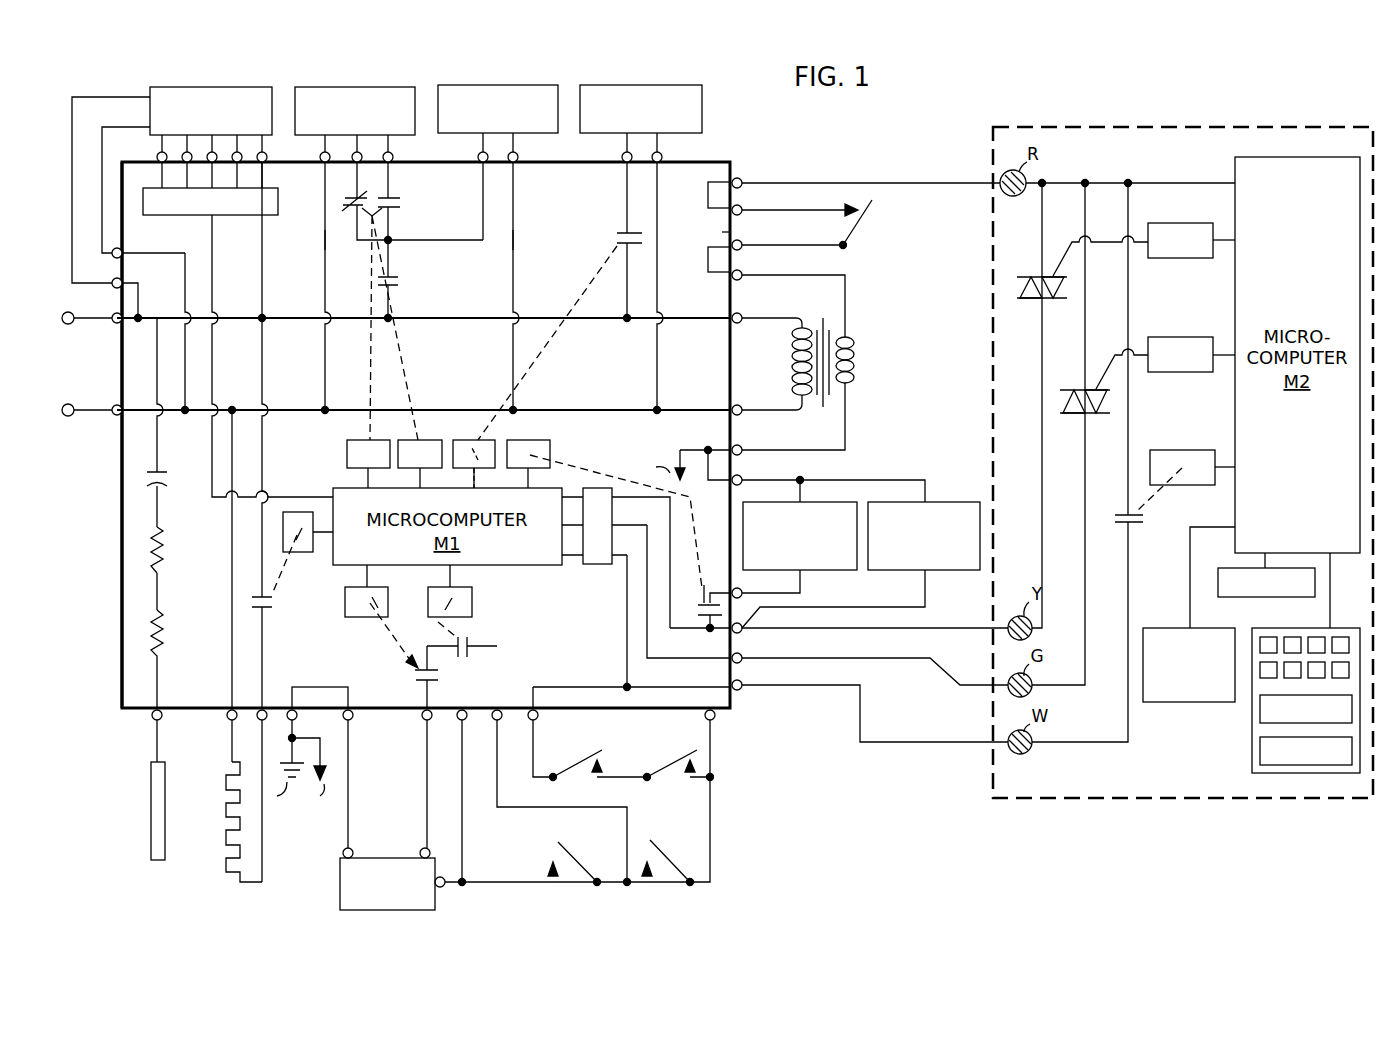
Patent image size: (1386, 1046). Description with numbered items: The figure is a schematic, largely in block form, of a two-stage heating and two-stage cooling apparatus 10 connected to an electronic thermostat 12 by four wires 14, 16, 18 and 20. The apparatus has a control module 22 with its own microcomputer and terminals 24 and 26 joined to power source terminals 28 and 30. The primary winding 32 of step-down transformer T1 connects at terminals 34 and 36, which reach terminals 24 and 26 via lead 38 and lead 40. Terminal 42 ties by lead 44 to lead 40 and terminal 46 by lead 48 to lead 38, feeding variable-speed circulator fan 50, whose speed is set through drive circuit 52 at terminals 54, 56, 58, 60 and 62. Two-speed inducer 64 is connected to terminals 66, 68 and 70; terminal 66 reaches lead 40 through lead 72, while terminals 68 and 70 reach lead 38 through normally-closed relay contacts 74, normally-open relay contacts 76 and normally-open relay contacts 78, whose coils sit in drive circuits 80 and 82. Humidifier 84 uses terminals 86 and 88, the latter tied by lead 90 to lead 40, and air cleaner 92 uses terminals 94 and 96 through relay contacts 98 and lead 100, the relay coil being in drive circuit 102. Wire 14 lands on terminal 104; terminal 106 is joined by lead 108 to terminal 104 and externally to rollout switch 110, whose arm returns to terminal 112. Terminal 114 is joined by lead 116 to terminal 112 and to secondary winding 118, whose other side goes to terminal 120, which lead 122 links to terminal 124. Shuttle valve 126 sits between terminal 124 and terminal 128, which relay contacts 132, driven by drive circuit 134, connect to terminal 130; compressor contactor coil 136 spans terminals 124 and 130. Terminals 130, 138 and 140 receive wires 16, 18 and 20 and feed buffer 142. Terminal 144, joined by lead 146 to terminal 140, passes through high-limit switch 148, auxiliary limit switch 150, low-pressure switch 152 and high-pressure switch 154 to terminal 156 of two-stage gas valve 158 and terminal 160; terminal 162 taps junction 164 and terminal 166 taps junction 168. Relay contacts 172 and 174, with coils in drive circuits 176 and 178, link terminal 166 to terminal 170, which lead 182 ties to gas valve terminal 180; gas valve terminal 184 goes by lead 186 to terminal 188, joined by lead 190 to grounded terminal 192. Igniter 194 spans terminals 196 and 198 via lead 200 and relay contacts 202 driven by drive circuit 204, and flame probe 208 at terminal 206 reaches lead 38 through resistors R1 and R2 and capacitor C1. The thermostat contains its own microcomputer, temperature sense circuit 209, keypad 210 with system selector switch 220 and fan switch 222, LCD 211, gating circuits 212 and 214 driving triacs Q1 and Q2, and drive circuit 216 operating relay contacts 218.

The two-stage heating and two-stage cooling apparatus 10 is at (742, 158).
The electronic thermostat 12 is at (974, 150).
The wire 14 is at (852, 182).
The wire 16 is at (884, 628).
The wire 18 is at (884, 658).
The wire 20 is at (860, 690).
The control module 22 is at (115, 552).
The terminal 24 is at (114, 322).
The terminal 26 is at (114, 405).
The terminal 28 is at (72, 312).
The terminal 30 is at (70, 416).
The primary winding 32 is at (793, 366).
The terminal 34 is at (748, 322).
The terminal 36 is at (746, 406).
The lead 38 is at (440, 318).
The lead 40 is at (440, 410).
The terminal 42 is at (113, 256).
The lead 44 is at (185, 269).
The terminal 46 is at (113, 288).
The lead 48 is at (138, 283).
The circulator fan 50 is at (250, 98).
The drive circuit 52 is at (262, 212).
The terminal 54 is at (157, 156).
The terminal 56 is at (182, 159).
The terminal 58 is at (207, 159).
The terminal 60 is at (232, 159).
The terminal 62 is at (258, 159).
The two-speed inducer 64 is at (399, 92).
The terminal 66 is at (325, 157).
The terminal 68 is at (357, 157).
The terminal 70 is at (388, 157).
The lead 72 is at (325, 244).
The normally-closed relay contacts 74 is at (353, 190).
The normally-open relay contacts 76 is at (398, 277).
The normally-open relay contacts 78 is at (395, 196).
The drive circuit 80 is at (343, 446).
The drive circuit 82 is at (405, 442).
The humidifier 84 is at (544, 92).
The terminal 86 is at (480, 156).
The terminal 88 is at (516, 157).
The lead 90 is at (516, 238).
The electrically operated air cleaner 92 is at (688, 92).
The terminal 94 is at (622, 156).
The terminal 96 is at (663, 157).
The normally-open relay contacts 98 is at (615, 226).
The lead 100 is at (718, 234).
The drive circuit 102 is at (470, 442).
The terminal 104 is at (741, 178).
The terminal 106 is at (744, 206).
The lead 108 is at (708, 195).
The rollout switch 110 is at (882, 228).
The terminal 112 is at (742, 241).
The terminal 114 is at (742, 271).
The lead 116 is at (700, 262).
The secondary winding 118 is at (855, 362).
The terminal 120 is at (744, 445).
The lead 122 is at (706, 480).
The terminal 124 is at (744, 477).
The shuttle valve 126 is at (834, 570).
The terminal 128 is at (744, 593).
The terminal 130 is at (744, 628).
The normally-open relay contacts 132 is at (704, 588).
The drive circuit 134 is at (558, 428).
The compressor contactor coil 136 is at (939, 570).
The terminal 138 is at (746, 658).
The terminal 140 is at (746, 685).
The buffer 142 is at (600, 566).
The terminal 144 is at (537, 718).
The lead 146 is at (564, 687).
The high-limit switch 148 is at (582, 745).
The auxiliary limit switch 150 is at (654, 745).
The low-pressure switch 152 is at (664, 842).
The high-pressure switch 154 is at (579, 842).
The terminal 156 is at (450, 886).
The two-stage gas valve 158 is at (394, 910).
The terminal 160 is at (462, 718).
The terminal 162 is at (714, 718).
The junction 164 is at (712, 781).
The terminal 166 is at (499, 718).
The junction 168 is at (630, 889).
The terminal 170 is at (430, 718).
The normally-open relay contacts 172 is at (472, 638).
The normally-open relay contacts 174 is at (432, 682).
The drive circuit 176 is at (472, 605).
The drive circuit 178 is at (364, 620).
The terminal 180 is at (422, 848).
The lead 182 is at (426, 792).
The terminal 184 is at (345, 848).
The lead 186 is at (348, 758).
The terminal 188 is at (351, 719).
The lead 190 is at (295, 687).
The terminal 192 is at (295, 720).
The igniter 194 is at (226, 868).
The terminal 196 is at (228, 719).
The terminal 198 is at (258, 719).
The lead 200 is at (232, 634).
The normally-open relay contacts 202 is at (272, 612).
The drive circuit 204 is at (298, 562).
The terminal 206 is at (152, 719).
The flame probe 208 is at (148, 820).
The temperature sense circuit 209 is at (1188, 702).
The keypad 210 is at (1284, 634).
The LCD 211 is at (1258, 602).
The gating circuit 212 is at (1162, 224).
The gating circuit 214 is at (1162, 337).
The drive circuit 216 is at (1172, 450).
The normally-open relay contacts 218 is at (1146, 524).
The system selector switch 220 is at (1264, 716).
The fan switch 222 is at (1274, 759).
The triac Q1 is at (1034, 314).
The triac Q2 is at (1083, 428).
The voltage step-down transformer T1 is at (812, 306).
The capacitor C1 is at (167, 472).
The resistor R1 is at (169, 623).
The resistor R2 is at (169, 542).